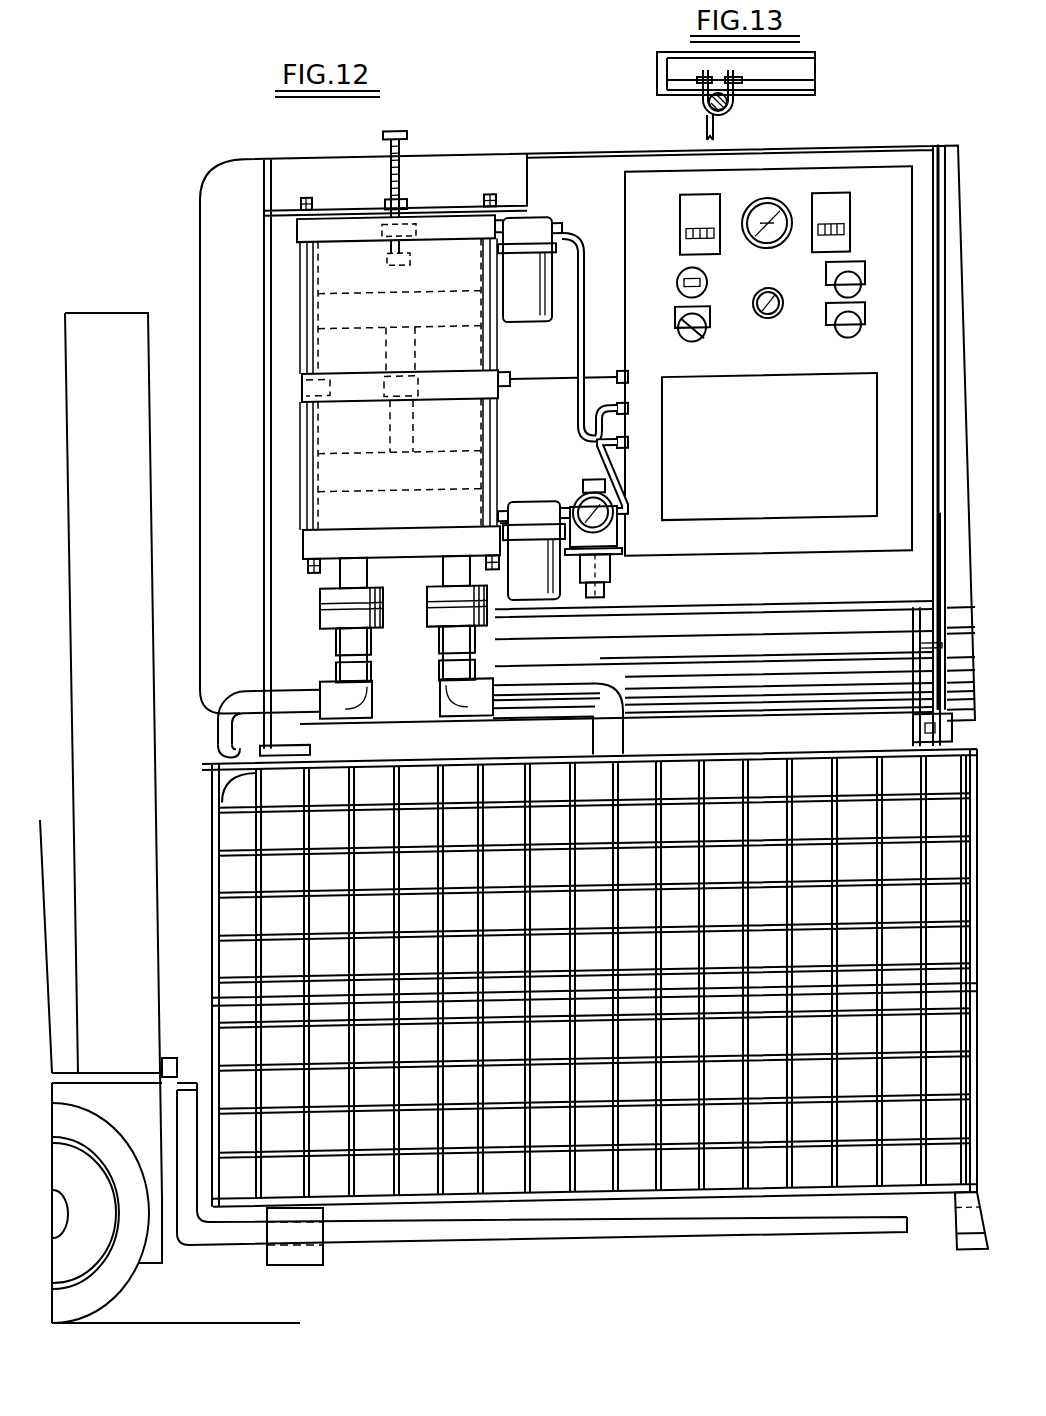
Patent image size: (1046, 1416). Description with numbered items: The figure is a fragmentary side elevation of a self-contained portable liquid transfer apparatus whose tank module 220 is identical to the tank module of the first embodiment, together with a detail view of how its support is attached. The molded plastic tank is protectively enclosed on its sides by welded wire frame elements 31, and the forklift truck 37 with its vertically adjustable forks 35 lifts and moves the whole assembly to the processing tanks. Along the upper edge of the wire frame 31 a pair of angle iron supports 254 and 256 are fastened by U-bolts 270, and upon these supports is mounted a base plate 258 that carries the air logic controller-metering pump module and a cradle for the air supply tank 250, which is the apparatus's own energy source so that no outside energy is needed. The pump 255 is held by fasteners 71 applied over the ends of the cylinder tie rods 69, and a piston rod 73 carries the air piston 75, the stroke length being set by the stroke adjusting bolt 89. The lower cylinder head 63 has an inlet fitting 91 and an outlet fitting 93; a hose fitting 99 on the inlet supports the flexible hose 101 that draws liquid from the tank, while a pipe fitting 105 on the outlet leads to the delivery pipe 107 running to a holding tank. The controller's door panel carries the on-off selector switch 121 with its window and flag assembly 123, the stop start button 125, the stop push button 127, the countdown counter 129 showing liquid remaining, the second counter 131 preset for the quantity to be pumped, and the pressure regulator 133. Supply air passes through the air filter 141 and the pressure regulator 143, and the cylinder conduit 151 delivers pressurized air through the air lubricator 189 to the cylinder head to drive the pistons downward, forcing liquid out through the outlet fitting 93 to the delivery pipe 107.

In FIG. 12, the welded wire frame elements 31 is at (300, 882).
In FIG. 13, the welded wire frame elements 31 is at (726, 111).
In FIG. 12, the forks 35 is at (433, 1234).
In FIG. 12, the forklift truck 37 is at (152, 1264).
In FIG. 12, the cylinder head 63 is at (312, 545).
In FIG. 12, the cylinder tie rods 69 is at (489, 200).
In FIG. 12, the fasteners 71 is at (399, 464).
In FIG. 12, the piston rod 73 is at (413, 357).
In FIG. 12, the air piston 75 is at (399, 306).
In FIG. 12, the stroke adjusting bolt 89 is at (408, 139).
In FIG. 12, the inlet fitting 91 is at (490, 626).
In FIG. 12, the outlet fitting 93 is at (320, 596).
In FIG. 12, the hose fitting 99 is at (463, 717).
In FIG. 12, the flexible hose 101 is at (607, 688).
In FIG. 12, the pipe fitting 105 is at (352, 716).
In FIG. 12, the delivery pipe 107 is at (258, 690).
In FIG. 12, the on-off selector switch 121 is at (692, 345).
In FIG. 12, the window and flag assembly 123 is at (706, 293).
In FIG. 12, the stop start button 125 is at (848, 292).
In FIG. 12, the stop push button 127 is at (846, 348).
In FIG. 12, the predetermining digital counter 129 is at (690, 221).
In FIG. 12, the second predetermining countdown digital counter 131 is at (843, 226).
In FIG. 12, the pressure regulator 133 is at (768, 330).
In FIG. 12, the air filter 141 is at (531, 505).
In FIG. 12, the pressure regulator 143 is at (612, 583).
In FIG. 12, the air conduit 151 is at (598, 218).
In FIG. 12, the air lubricator 189 is at (519, 316).
In FIG. 12, the tank module 220 is at (740, 1200).
In FIG. 12, the air supply tank 250 is at (246, 173).
In FIG. 12, the angle iron support 254 is at (232, 751).
In FIG. 12, the pump 255 is at (314, 344).
In FIG. 12, the angle iron support 256 is at (912, 739).
In FIG. 12, the base plate 258 is at (262, 258).
In FIG. 13, the base plate 258 is at (657, 77).
In FIG. 13, the U-bolts 270 is at (740, 101).